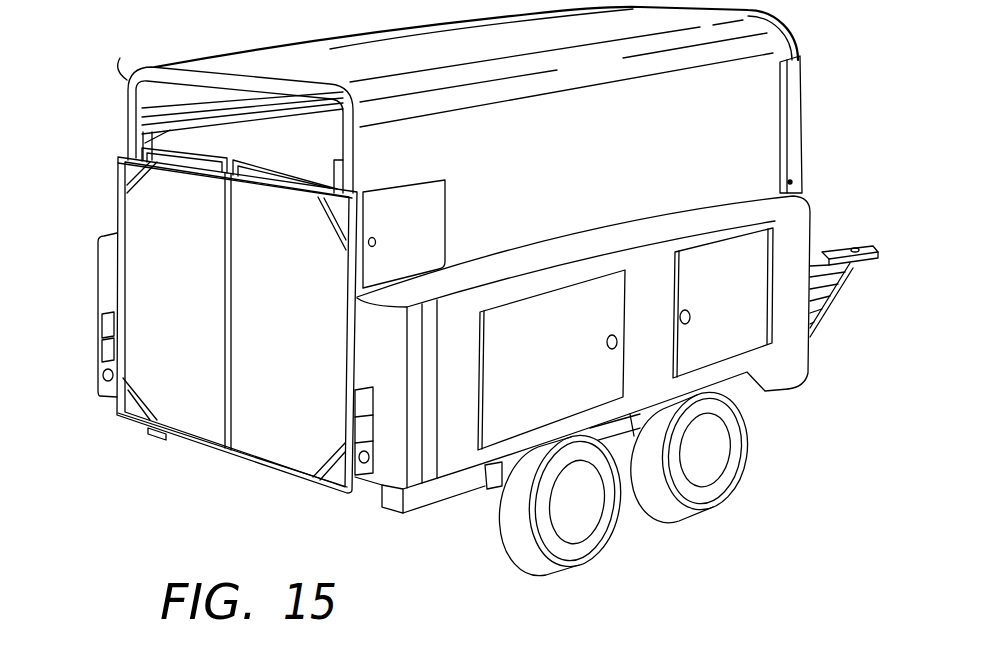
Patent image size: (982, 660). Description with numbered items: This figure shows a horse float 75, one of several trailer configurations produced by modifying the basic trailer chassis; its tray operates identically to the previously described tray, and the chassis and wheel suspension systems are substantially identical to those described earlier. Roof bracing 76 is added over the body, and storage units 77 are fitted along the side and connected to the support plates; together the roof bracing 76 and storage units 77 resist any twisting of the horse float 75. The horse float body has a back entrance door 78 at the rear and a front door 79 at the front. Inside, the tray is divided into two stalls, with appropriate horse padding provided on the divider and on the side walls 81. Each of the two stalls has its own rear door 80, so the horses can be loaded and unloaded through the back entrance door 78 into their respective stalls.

The horse float 75 is at (783, 477).
The roof bracing 76 is at (133, 82).
The storage units 77 is at (788, 238).
The back entrance door 78 is at (153, 243).
The front door 79 is at (793, 120).
The rear door 80 is at (173, 160).
The side walls 81 is at (197, 133).